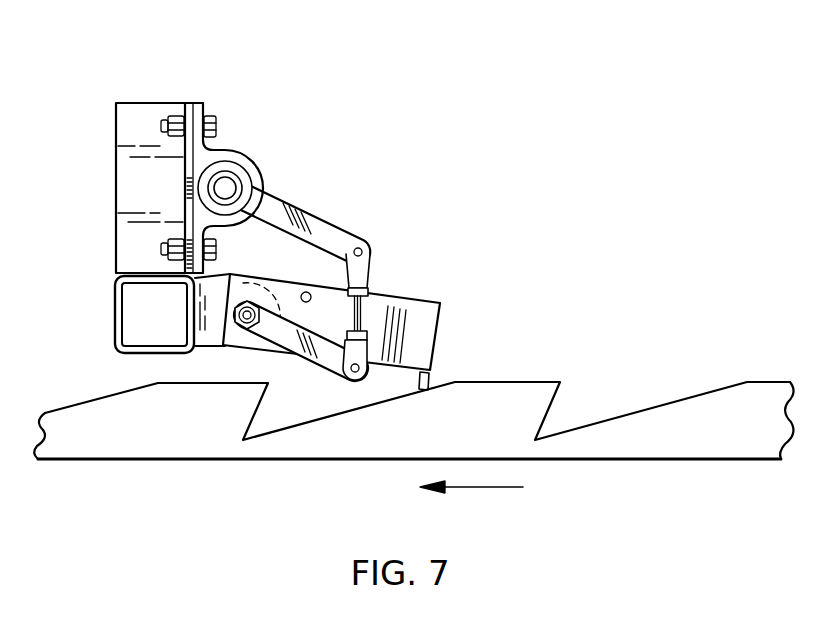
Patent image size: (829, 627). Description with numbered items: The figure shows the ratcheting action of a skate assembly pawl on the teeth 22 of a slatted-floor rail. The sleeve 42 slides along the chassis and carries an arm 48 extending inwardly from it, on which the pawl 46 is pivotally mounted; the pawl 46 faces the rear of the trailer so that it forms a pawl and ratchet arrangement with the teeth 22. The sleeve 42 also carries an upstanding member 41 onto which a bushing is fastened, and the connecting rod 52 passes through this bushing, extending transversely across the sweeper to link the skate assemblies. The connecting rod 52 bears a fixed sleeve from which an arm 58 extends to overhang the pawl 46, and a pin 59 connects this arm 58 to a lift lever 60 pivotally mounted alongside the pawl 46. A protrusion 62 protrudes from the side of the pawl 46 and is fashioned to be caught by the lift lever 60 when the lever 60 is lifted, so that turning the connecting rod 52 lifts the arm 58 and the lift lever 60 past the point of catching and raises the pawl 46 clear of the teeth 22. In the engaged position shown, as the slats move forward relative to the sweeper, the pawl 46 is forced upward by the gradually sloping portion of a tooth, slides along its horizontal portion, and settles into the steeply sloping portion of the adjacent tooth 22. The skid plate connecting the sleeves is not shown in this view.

The teeth 22 is at (536, 393).
The upstanding member 41 is at (147, 102).
The second sleeve 42 is at (112, 322).
The pawl 46 is at (423, 322).
The arm 48 is at (213, 332).
The connecting rod 52 is at (226, 188).
The arm 58 is at (333, 222).
The pin 59 is at (359, 310).
The lift lever 60 is at (328, 347).
The protrusion 62 is at (310, 294).